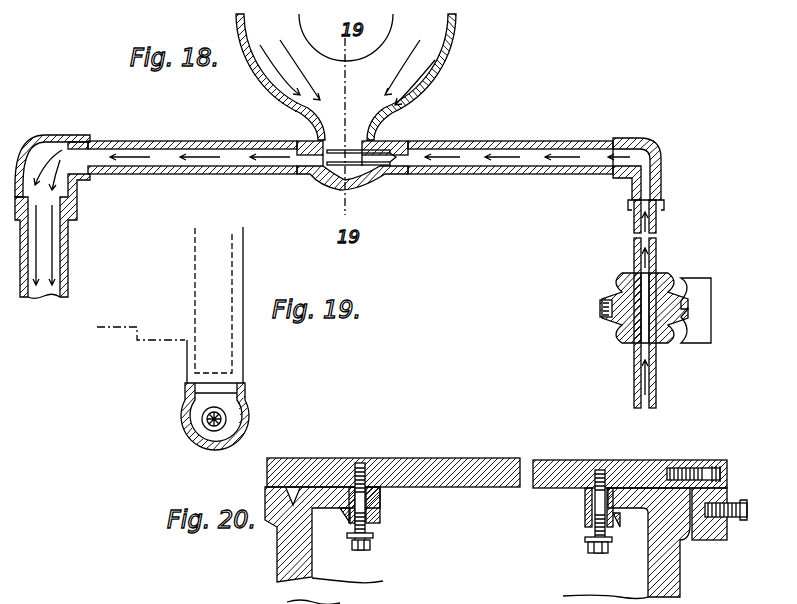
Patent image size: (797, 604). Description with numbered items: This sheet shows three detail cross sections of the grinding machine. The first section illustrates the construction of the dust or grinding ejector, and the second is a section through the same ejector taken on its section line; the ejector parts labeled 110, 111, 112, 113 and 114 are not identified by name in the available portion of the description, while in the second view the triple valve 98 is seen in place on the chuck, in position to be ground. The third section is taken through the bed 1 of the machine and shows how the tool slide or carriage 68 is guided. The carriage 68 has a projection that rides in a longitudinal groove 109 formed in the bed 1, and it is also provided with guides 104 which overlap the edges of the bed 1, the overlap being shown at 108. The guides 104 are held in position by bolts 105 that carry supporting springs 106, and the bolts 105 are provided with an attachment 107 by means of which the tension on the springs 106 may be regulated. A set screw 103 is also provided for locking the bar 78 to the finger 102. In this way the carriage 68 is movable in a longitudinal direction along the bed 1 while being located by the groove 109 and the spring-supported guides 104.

In FIG. 18, the receptacle / bowl 110 is at (443, 46).
In FIG. 19, the receptacle / bowl 110 is at (243, 353).
In FIG. 18, the nozzle fitting 111 is at (355, 185).
In FIG. 19, the nozzle fitting 111 is at (243, 433).
In FIG. 18, the supply pipe 112 is at (551, 148).
In FIG. 18, the valve 113 is at (622, 285).
In FIG. 18, the discharge pipe 114 is at (205, 134).
In FIG. 19, the triple valve 98 is at (175, 334).
In FIG. 20, the tool slide or carriage 68 is at (440, 458).
In FIG. 20, the longitudinal groove 109 is at (268, 488).
In FIG. 20, the bed 1 is at (275, 563).
In FIG. 20, the guides 104 is at (380, 508).
In FIG. 20, the bolts 105 is at (380, 493).
In FIG. 20, the supporting springs 106 is at (373, 535).
In FIG. 20, the attachment 107 is at (370, 548).
In FIG. 20, the overlap of guides with bed edges 108 is at (341, 514).
In FIG. 20, the bar 78 is at (716, 468).
In FIG. 20, the finger 102 is at (716, 540).
In FIG. 20, the set screw 103 is at (736, 503).